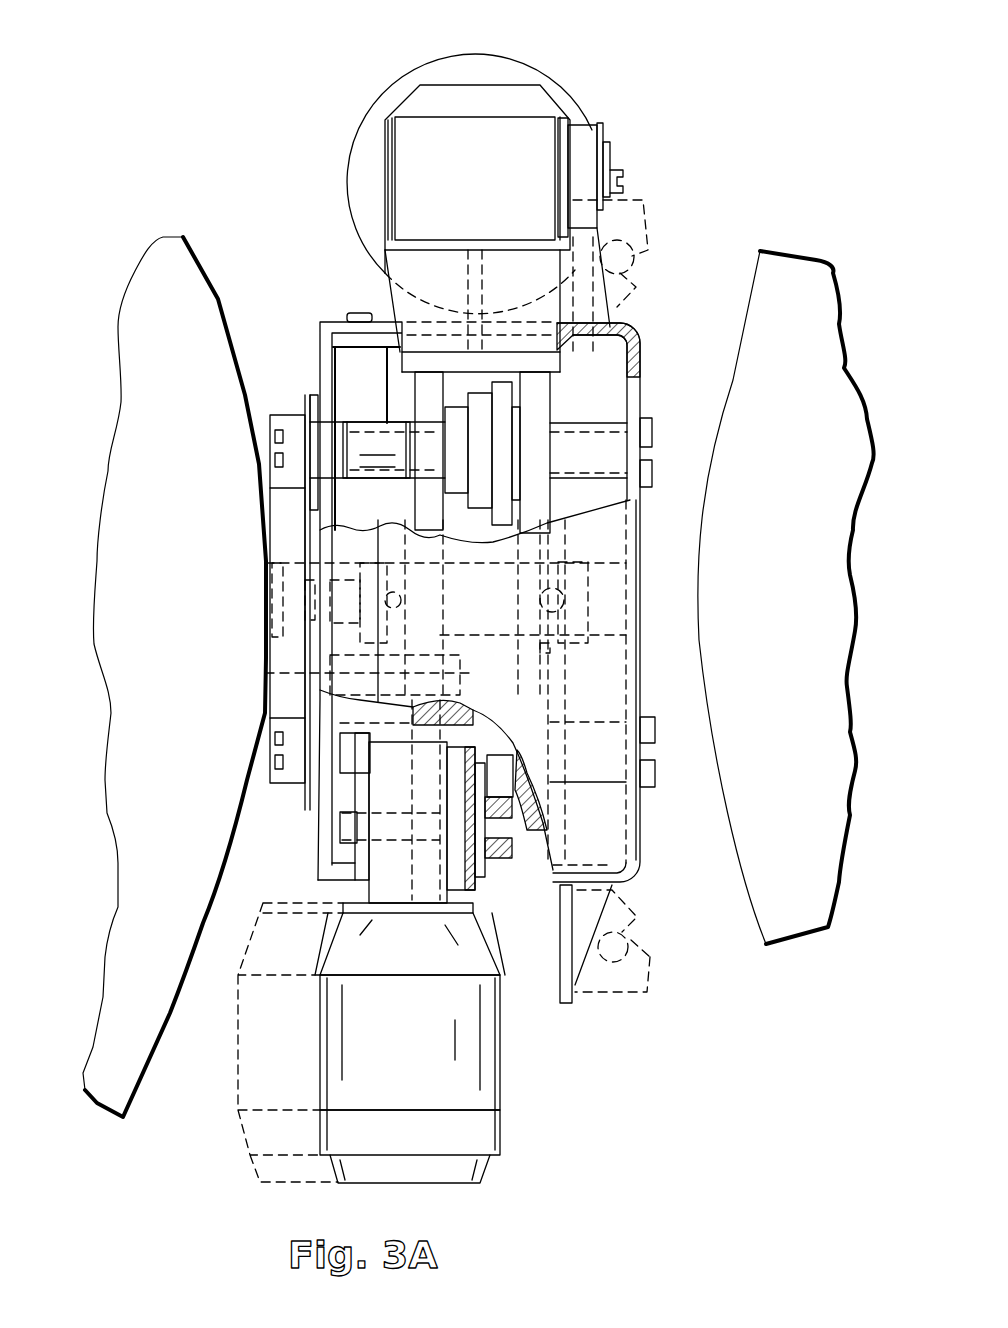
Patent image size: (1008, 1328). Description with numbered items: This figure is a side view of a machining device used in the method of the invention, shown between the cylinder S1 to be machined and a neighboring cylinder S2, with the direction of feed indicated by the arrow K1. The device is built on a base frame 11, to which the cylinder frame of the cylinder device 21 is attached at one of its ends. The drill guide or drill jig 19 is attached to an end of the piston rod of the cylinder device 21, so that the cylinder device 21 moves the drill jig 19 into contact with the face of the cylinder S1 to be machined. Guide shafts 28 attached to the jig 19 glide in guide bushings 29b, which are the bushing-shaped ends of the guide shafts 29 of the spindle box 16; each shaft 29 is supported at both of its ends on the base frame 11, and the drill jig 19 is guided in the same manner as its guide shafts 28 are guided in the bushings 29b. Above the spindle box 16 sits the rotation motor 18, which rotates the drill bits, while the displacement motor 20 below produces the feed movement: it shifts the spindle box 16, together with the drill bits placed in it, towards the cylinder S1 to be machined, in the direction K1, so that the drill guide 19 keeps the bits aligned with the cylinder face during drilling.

The base frame 11 is at (628, 330).
The spindle box 16 is at (473, 660).
The rotation motor 18 is at (530, 72).
The drill guide 19 is at (288, 418).
The displacement motor 20 is at (463, 1080).
The cylinder device 21 is at (466, 588).
The guide shafts 28 is at (312, 420).
The guide shafts 29 is at (375, 420).
The guide bushings 29b is at (372, 463).
The cylinder to be machined S1 is at (132, 467).
The sheet S2 is at (744, 357).
The direction of force K1 is at (650, 695).